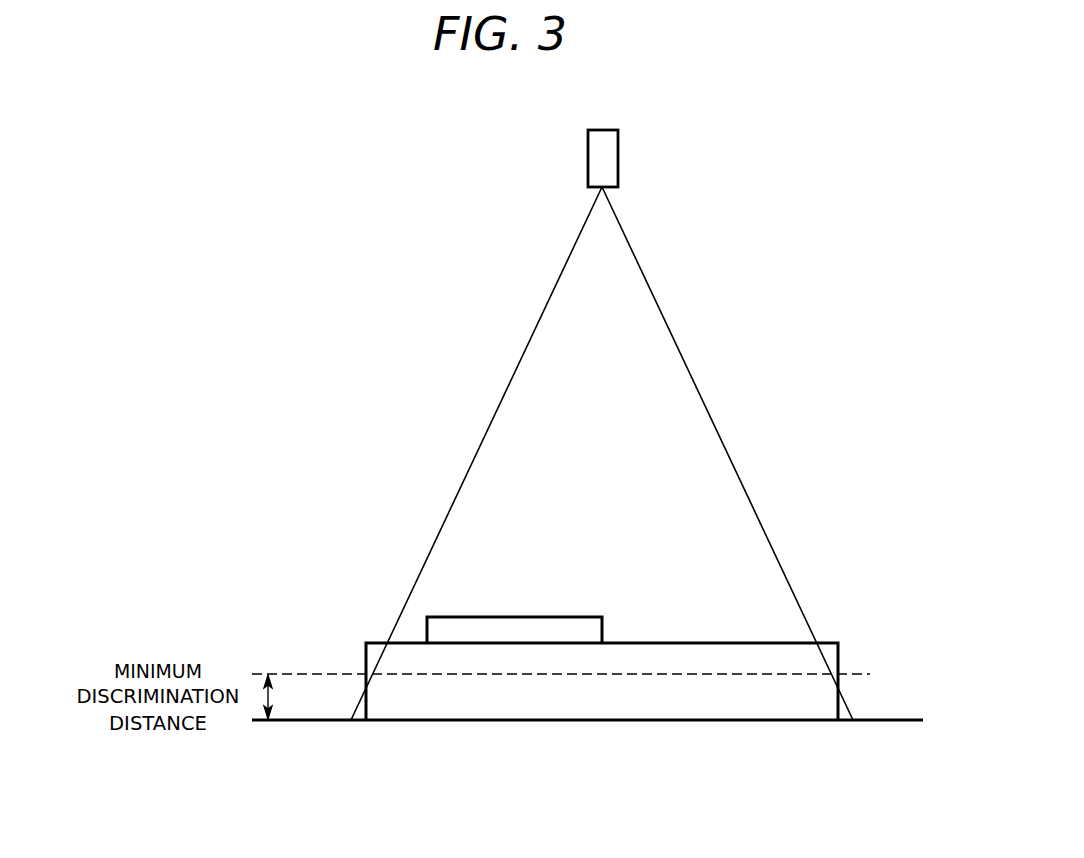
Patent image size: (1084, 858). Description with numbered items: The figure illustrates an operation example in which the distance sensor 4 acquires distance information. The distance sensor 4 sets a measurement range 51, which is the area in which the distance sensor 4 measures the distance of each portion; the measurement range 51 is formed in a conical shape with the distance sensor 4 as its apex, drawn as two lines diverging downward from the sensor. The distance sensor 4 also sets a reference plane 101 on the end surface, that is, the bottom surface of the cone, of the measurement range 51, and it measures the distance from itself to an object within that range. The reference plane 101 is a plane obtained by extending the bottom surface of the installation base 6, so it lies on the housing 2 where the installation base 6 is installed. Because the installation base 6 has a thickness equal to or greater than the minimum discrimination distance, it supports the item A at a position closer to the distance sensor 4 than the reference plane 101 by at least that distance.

The distance sensor 4 is at (602, 128).
The measurement range 51 is at (498, 404).
The installation base 6 is at (678, 642).
The item A is at (519, 614).
The housing 2 is at (900, 718).
The reference plane 101 is at (600, 722).